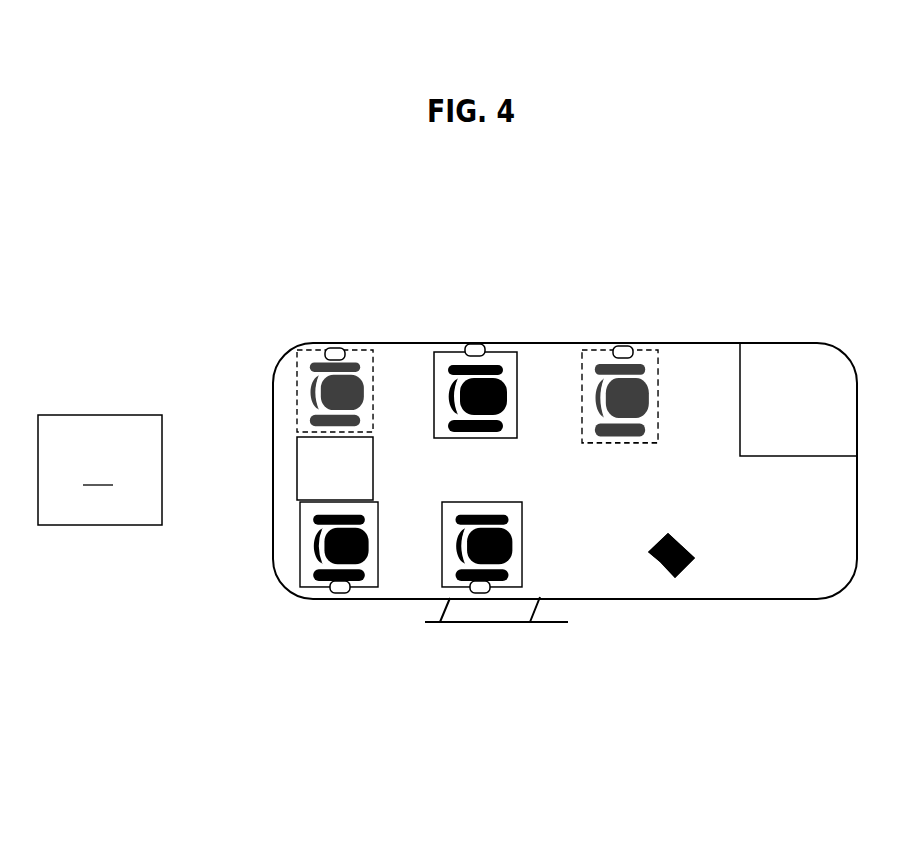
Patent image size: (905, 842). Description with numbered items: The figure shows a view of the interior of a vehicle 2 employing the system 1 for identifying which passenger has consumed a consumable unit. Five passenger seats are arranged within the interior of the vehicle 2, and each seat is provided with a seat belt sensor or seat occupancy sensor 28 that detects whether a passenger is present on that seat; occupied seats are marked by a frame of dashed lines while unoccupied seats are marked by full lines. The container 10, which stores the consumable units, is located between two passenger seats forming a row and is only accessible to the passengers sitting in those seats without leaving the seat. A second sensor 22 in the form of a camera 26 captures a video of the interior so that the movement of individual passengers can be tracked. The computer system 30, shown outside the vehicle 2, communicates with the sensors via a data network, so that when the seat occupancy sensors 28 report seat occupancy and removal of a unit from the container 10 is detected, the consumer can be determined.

The system 1 is at (189, 305).
The vehicle 2 is at (688, 343).
The container 10 is at (373, 469).
The second sensor 22 is at (690, 546).
The camera 26 is at (671, 555).
The seat occupancy sensors 28 is at (336, 347).
The computer system 30 is at (100, 470).